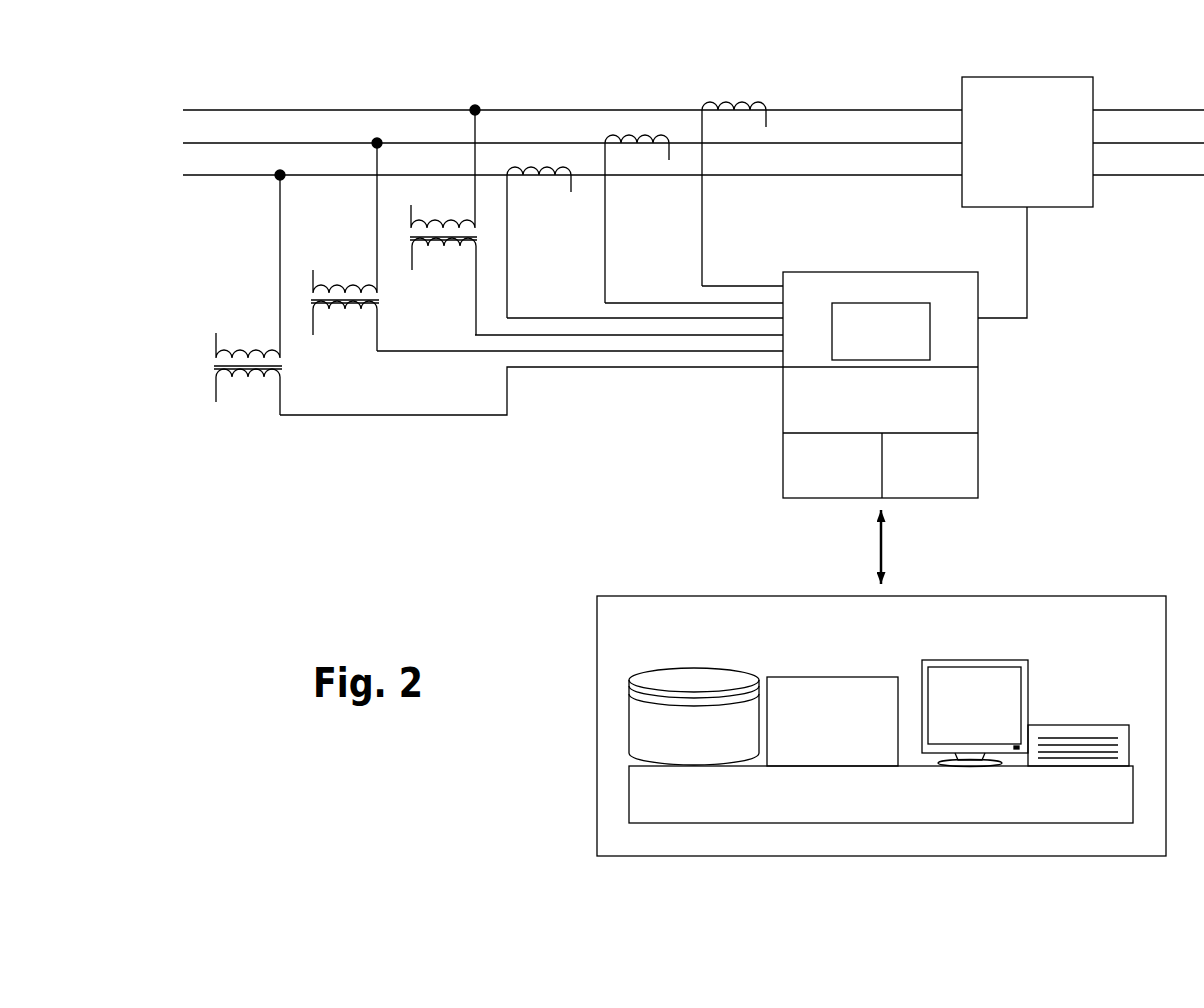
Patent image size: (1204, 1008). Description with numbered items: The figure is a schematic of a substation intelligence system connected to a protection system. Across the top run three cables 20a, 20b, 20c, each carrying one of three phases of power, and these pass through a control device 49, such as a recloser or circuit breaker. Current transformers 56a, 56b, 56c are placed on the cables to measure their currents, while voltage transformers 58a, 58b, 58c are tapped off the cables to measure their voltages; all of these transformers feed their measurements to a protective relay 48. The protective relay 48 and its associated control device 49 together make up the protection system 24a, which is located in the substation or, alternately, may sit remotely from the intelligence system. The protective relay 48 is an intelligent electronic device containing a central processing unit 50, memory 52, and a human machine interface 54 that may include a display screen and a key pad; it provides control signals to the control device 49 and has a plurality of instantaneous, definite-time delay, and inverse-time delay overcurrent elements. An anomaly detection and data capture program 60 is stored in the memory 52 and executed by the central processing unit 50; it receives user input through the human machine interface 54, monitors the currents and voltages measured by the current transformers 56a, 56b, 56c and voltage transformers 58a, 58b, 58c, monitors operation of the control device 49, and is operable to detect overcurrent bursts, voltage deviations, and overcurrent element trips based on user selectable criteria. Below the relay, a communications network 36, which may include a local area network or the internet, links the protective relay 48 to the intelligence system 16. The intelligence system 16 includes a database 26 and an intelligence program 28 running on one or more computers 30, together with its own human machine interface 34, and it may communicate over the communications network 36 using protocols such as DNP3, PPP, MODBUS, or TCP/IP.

The intelligence system 16 is at (1168, 594).
The cable 20a is at (693, 102).
The cable 20b is at (693, 134).
The cable 20c is at (693, 167).
The protection system 24a is at (603, 438).
The database 26 is at (694, 667).
The intelligence program 28 is at (832, 721).
The computers 30 is at (881, 794).
The human machine interface 34 is at (1043, 689).
The communications network 36 is at (882, 546).
The protective relay 48 is at (836, 371).
The control device 49 is at (1062, 212).
The central processing unit 50 is at (832, 471).
The memory 52 is at (929, 471).
The human machine interface 54 is at (881, 331).
The current transformer 56a is at (722, 102).
The current transformer 56b is at (630, 134).
The current transformer 56c is at (552, 166).
The voltage transformer 58a is at (443, 271).
The voltage transformer 58b is at (345, 336).
The voltage transformer 58c is at (214, 352).
The anomaly detection and data capture program 60 is at (881, 408).